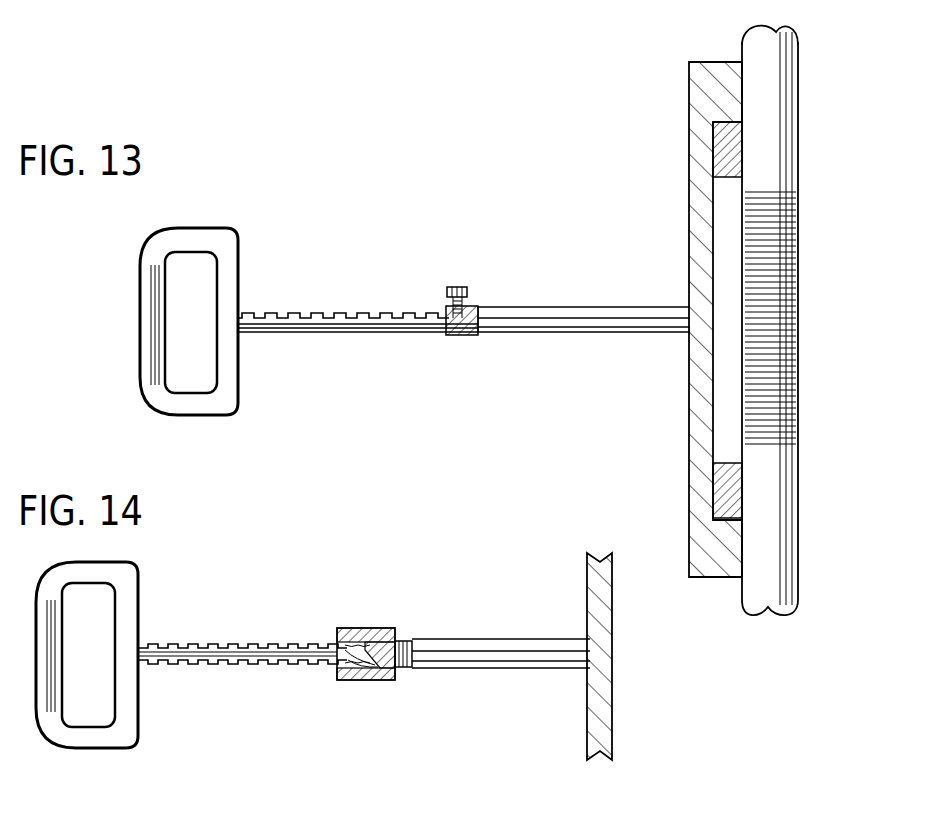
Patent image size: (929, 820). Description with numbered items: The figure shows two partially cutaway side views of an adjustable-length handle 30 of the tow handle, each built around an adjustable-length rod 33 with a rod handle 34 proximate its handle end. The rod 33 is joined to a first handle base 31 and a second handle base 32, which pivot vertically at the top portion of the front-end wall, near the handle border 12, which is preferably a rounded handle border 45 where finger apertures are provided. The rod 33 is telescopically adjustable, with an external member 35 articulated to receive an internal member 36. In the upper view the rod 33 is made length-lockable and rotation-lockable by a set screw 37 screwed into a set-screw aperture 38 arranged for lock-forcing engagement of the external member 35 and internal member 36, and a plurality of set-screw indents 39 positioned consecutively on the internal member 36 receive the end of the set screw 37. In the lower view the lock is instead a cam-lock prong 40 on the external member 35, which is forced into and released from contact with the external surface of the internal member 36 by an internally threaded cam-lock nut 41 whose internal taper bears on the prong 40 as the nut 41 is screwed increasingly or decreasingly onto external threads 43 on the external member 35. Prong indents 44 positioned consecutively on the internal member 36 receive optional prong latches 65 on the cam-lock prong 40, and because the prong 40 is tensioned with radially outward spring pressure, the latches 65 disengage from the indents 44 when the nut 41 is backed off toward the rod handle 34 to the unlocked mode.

In FIG. 13, the handle border 12 is at (806, 321).
In FIG. 13, the adjustable-length handle 30 is at (112, 322).
In FIG. 13, the first handle base 31 is at (712, 550).
In FIG. 13, the second handle base 32 is at (722, 86).
In FIG. 13, the adjustable-length rod 33 is at (461, 375).
In FIG. 14, the adjustable-length rod 33 is at (463, 727).
In FIG. 13, the rod handle 34 is at (200, 405).
In FIG. 14, the rod handle 34 is at (92, 740).
In FIG. 13, the external member 35 is at (590, 334).
In FIG. 14, the external member 35 is at (520, 670).
In FIG. 13, the internal member 36 is at (358, 342).
In FIG. 14, the internal member 36 is at (242, 690).
In FIG. 13, the set screw 37 is at (450, 286).
In FIG. 13, the set-screw aperture 38 is at (470, 308).
In FIG. 13, the set-screw indents 39 is at (326, 315).
In FIG. 14, the cam-lock prong 40 is at (354, 698).
In FIG. 14, the cam-lock nut 41 is at (380, 682).
In FIG. 14, the external threads 43 is at (404, 640).
In FIG. 14, the prong indents 44 is at (215, 646).
In FIG. 13, the rounded handle border 45 is at (775, 312).
In FIG. 14, the prong latches 65 is at (342, 634).